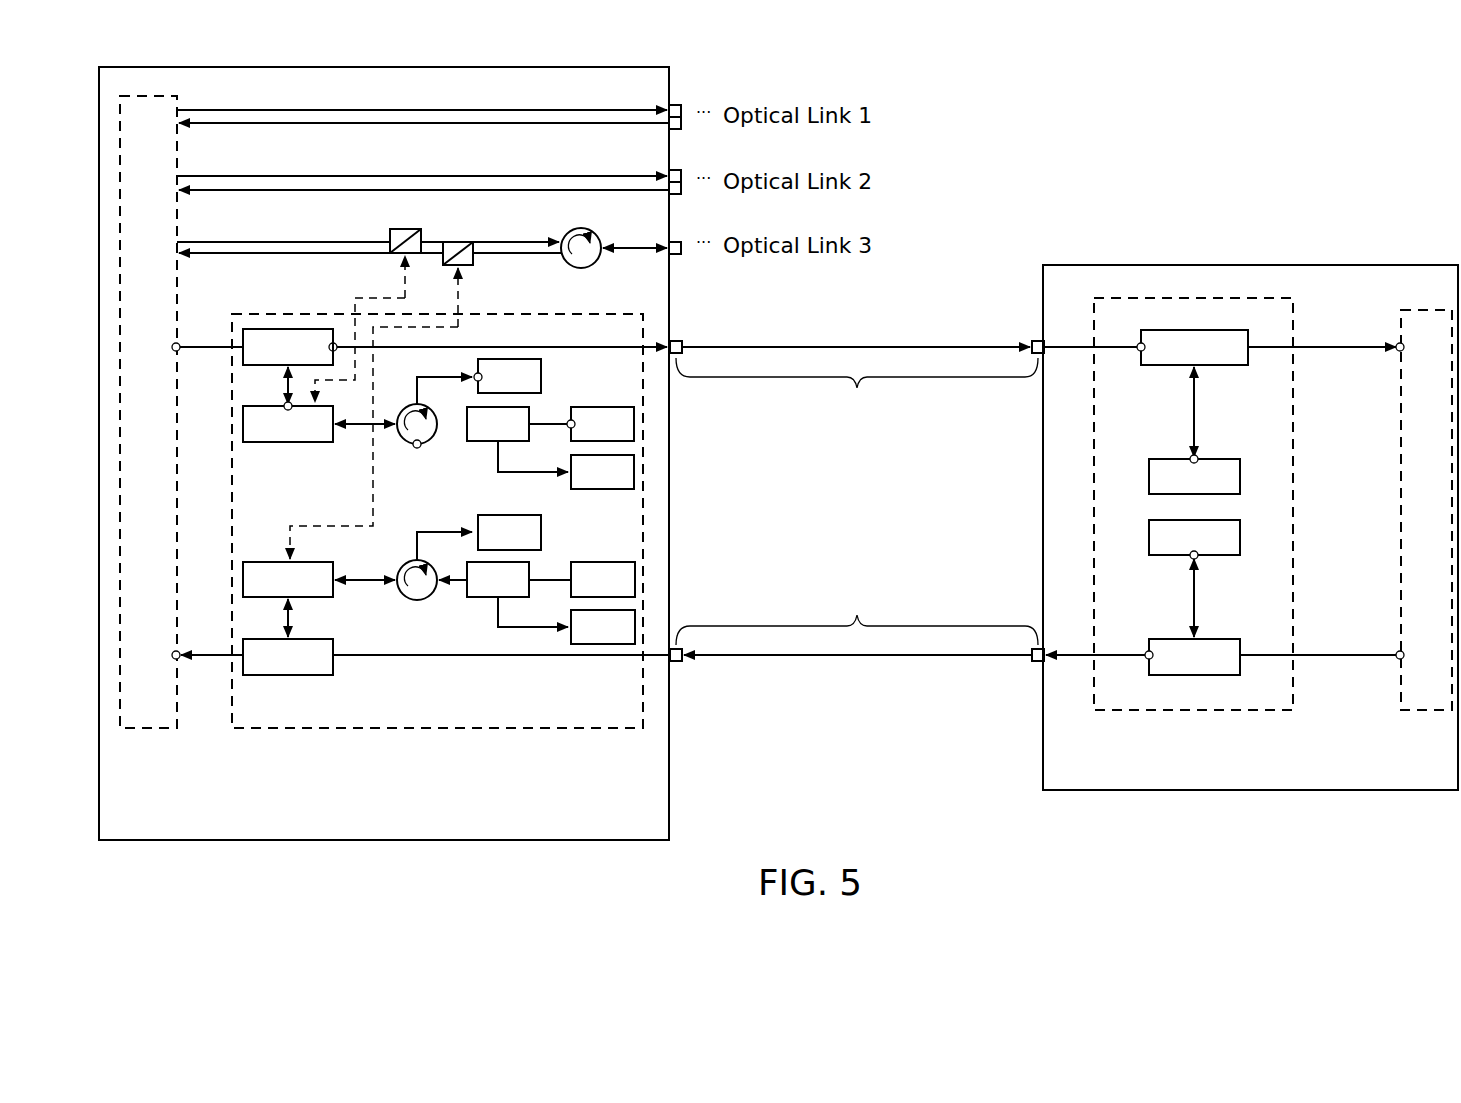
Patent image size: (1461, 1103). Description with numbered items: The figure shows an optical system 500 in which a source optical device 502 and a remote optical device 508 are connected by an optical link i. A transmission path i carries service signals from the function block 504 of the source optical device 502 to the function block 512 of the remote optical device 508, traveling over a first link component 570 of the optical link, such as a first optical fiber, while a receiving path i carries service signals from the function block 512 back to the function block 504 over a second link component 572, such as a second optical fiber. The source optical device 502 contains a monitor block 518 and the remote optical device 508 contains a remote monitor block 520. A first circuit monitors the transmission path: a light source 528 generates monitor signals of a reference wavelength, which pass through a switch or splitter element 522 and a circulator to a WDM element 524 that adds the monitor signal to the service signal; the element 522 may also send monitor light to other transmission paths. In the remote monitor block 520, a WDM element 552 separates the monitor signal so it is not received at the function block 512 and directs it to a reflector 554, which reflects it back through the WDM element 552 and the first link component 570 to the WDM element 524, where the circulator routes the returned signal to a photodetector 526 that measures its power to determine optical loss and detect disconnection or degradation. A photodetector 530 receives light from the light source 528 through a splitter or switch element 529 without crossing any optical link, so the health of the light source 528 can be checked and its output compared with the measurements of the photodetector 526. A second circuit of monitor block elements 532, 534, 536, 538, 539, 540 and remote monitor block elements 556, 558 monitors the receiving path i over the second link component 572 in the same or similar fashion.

The optical system 500 is at (1225, 82).
The source optical device 502 is at (670, 797).
The function block 504 is at (152, 95).
The remote optical device 508 is at (1043, 778).
The function block 512 is at (1425, 308).
The monitor block 518 is at (435, 728).
The remote monitor block 520 is at (1293, 705).
The switch element and/or splitter element 522 is at (303, 443).
The WDM element 524 is at (290, 329).
The photodetector 526 is at (540, 350).
The light source 528 is at (634, 433).
The element 529 is at (480, 441).
The photodetector 530 is at (634, 473).
The monitor block element 532 is at (272, 560).
The monitor block element 534 is at (290, 676).
The monitor block element 536 is at (541, 532).
The monitor block element 538 is at (635, 572).
The monitor block element 539 is at (482, 598).
The monitor block element 540 is at (600, 645).
The WDM element 552 is at (1248, 340).
The reflector 554 is at (1240, 487).
The remote monitor block element 556 is at (1240, 650).
The remote monitor block element 558 is at (1240, 540).
The first link component 570 is at (857, 390).
The second link component 572 is at (857, 613).